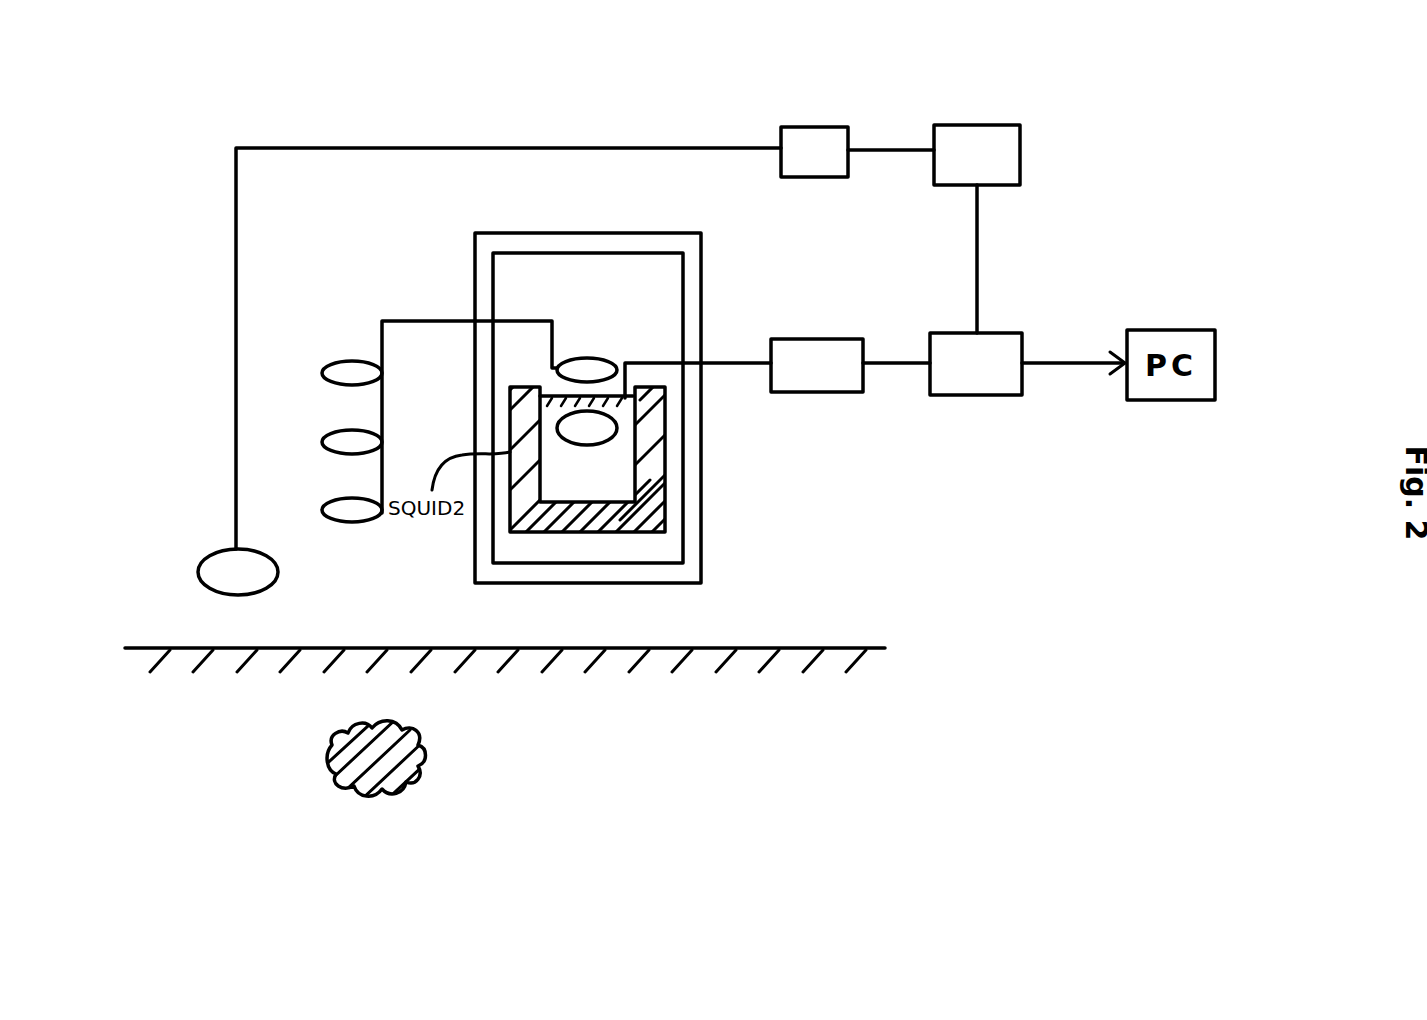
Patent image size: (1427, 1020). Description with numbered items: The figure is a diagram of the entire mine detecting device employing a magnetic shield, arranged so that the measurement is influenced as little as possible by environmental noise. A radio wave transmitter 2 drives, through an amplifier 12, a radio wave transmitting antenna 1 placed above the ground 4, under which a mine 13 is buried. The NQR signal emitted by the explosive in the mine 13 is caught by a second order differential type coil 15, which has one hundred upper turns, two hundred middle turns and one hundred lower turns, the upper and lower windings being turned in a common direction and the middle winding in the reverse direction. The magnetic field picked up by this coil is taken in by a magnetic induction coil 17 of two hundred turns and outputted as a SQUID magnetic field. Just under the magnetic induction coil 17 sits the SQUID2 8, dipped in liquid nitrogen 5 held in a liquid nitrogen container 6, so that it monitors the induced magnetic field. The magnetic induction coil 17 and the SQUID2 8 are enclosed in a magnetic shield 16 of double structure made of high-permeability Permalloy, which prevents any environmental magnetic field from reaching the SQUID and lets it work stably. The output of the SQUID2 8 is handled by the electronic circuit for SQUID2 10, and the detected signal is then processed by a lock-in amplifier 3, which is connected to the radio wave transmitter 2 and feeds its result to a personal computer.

The radio wave transmitting antenna 1 is at (199, 570).
The radio wave transmitter 2 is at (980, 125).
The lock-in amplifier 3 is at (985, 396).
The ground 4 is at (835, 648).
The liquid nitrogen 5 is at (601, 493).
The liquid nitrogen container 6 is at (650, 503).
The SQUID2 8 is at (617, 430).
The electronic circuit for SQUID2 10 is at (820, 393).
The amplifier 12 is at (815, 127).
The mine 13 is at (425, 750).
The second order differential type coil 15 is at (412, 320).
The magnetic shield 16 is at (703, 275).
The magnetic induction coil 17 is at (590, 358).